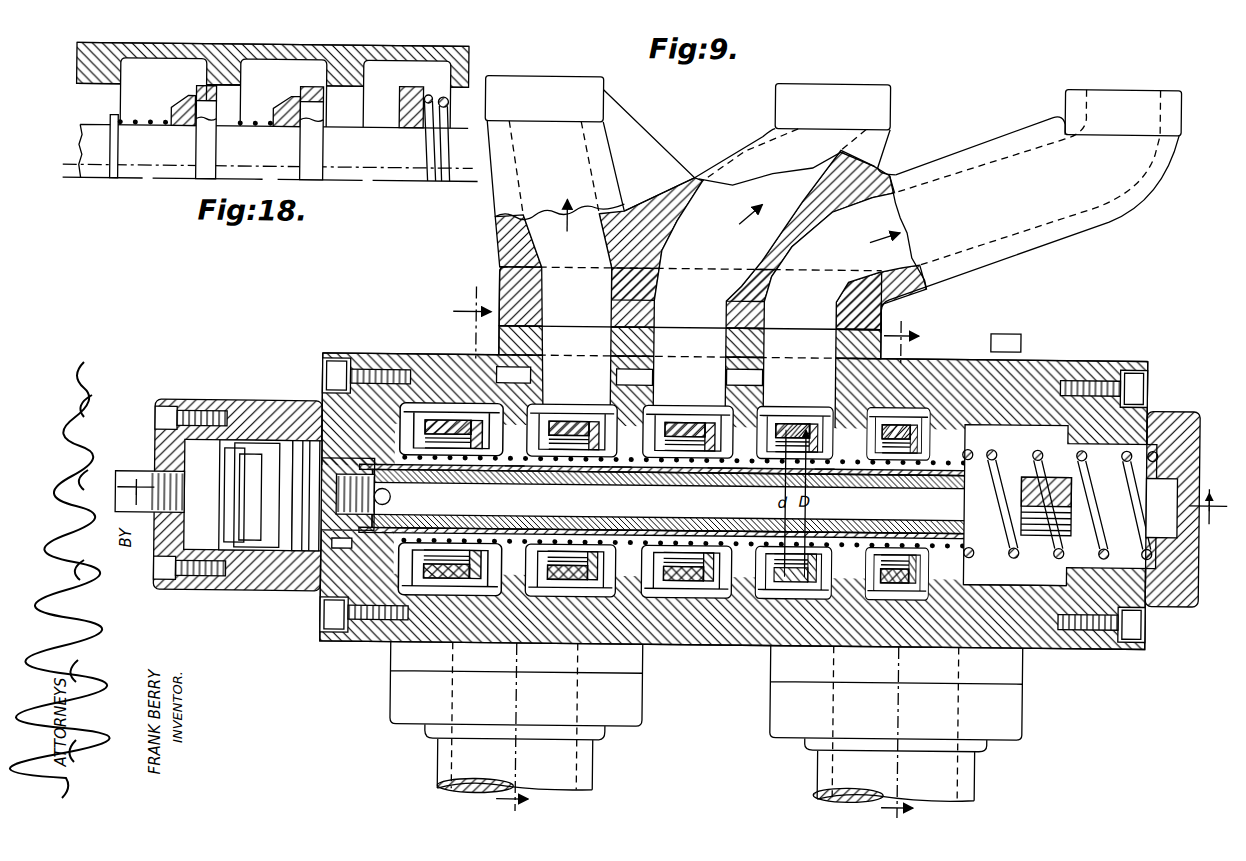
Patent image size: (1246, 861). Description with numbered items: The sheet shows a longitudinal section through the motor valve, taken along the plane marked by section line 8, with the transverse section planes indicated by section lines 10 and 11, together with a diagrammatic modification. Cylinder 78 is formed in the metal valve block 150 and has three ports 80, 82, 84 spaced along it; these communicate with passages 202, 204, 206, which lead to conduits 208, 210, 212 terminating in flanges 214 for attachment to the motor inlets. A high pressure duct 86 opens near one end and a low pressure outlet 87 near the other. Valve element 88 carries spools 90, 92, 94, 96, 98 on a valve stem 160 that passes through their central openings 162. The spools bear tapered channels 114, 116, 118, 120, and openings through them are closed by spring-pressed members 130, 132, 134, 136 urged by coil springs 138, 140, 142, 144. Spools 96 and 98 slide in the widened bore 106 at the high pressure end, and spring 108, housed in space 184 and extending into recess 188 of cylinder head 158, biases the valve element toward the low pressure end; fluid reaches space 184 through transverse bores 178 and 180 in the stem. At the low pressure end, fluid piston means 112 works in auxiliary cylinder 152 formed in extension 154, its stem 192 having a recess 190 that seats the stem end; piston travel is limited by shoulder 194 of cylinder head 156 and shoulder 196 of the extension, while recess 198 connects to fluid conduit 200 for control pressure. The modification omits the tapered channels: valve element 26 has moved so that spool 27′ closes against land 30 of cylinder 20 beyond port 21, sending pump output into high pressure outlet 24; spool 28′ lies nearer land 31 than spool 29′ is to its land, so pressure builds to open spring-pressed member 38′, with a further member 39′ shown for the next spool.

In FIG. 18, the cylinder 20 is at (103, 80).
In FIG. 18, the port 21 is at (200, 88).
In FIG. 18, the high pressure outlet 24 is at (130, 102).
In FIG. 18, the spool 27′ is at (200, 90).
In FIG. 18, the land 30 is at (240, 92).
In FIG. 18, the spool 28′ is at (300, 92).
In FIG. 18, the spool 29′ is at (405, 89).
In FIG. 18, the land 31 is at (355, 92).
In FIG. 18, the valve element 26 is at (73, 130).
In FIG. 18, the spring-pressed member 38′ is at (178, 128).
In FIG. 18, the wedge ring 39′ is at (283, 128).
In FIG. 9, the flanges 214 is at (555, 90).
In FIG. 9, the conduit 210 is at (722, 186).
In FIG. 9, the conduit 212 is at (878, 210).
In FIG. 9, the conduit 208 is at (538, 232).
In FIG. 9, the section line 10— 10 is at (517, 549).
In FIG. 9, the section line 11— 11 is at (897, 568).
In FIG. 9, the section line 8— 8 is at (672, 504).
In FIG. 9, the tapered channels 114 is at (422, 405).
In FIG. 9, the spring-pressed member 130 is at (470, 420).
In FIG. 9, the passage 202 is at (542, 374).
In FIG. 9, the port 80 is at (543, 408).
In FIG. 9, the tapered channels 116 is at (583, 413).
In FIG. 9, the passage 204 is at (657, 375).
In FIG. 9, the port 82 is at (658, 410).
In FIG. 9, the tapered channels 118 is at (700, 415).
In FIG. 9, the passage 206 is at (766, 374).
In FIG. 9, the port 84 is at (768, 412).
In FIG. 9, the tapered channels 120 is at (812, 412).
In FIG. 9, the valve block 150 is at (990, 365).
In FIG. 9, the cylinder head 156 is at (178, 404).
In FIG. 9, the extension 154 is at (235, 404).
In FIG. 9, the fluid piston means 112 is at (255, 444).
In FIG. 9, the auxiliary cylinder 152 is at (312, 460).
In FIG. 9, the fluid conduit 200 is at (136, 476).
In FIG. 9, the recess 190 is at (290, 463).
In FIG. 9, the recess 198 is at (212, 482).
In FIG. 9, the shoulder 194 is at (218, 540).
In FIG. 9, the stem 192 is at (313, 554).
In FIG. 9, the shoulder 196 is at (353, 547).
In FIG. 9, the transverse bore 178 is at (391, 499).
In FIG. 9, the central openings 162 is at (455, 467).
In FIG. 9, the cylinder 78 is at (510, 462).
In FIG. 9, the coil spring 138 is at (514, 467).
In FIG. 9, the spring-pressed member 132 is at (600, 468).
In FIG. 9, the coil spring 140 is at (620, 468).
In FIG. 9, the spring-pressed member 134 is at (718, 468).
In FIG. 9, the coil spring 142 is at (738, 468).
In FIG. 9, the valve stem 160 is at (825, 468).
In FIG. 9, the spring-pressed member 136 is at (862, 468).
In FIG. 9, the coil spring 144 is at (912, 468).
In FIG. 9, the transverse bore 180 is at (981, 503).
In FIG. 9, the spool 98 is at (966, 436).
In FIG. 9, the valve element 88 is at (1008, 460).
In FIG. 9, the spring 108 is at (1125, 455).
In FIG. 9, the space 184 is at (1057, 462).
In FIG. 9, the recess 188 is at (1112, 565).
In FIG. 9, the cylinder head 158 is at (1172, 420).
In FIG. 9, the spool 90 is at (447, 597).
In FIG. 9, the low pressure outlet 87 is at (478, 597).
In FIG. 9, the spool 92 is at (588, 597).
In FIG. 9, the spool 94 is at (708, 597).
In FIG. 9, the spool 96 is at (858, 597).
In FIG. 9, the high pressure duct 86 is at (905, 597).
In FIG. 9, the widened bore 106 is at (1033, 583).